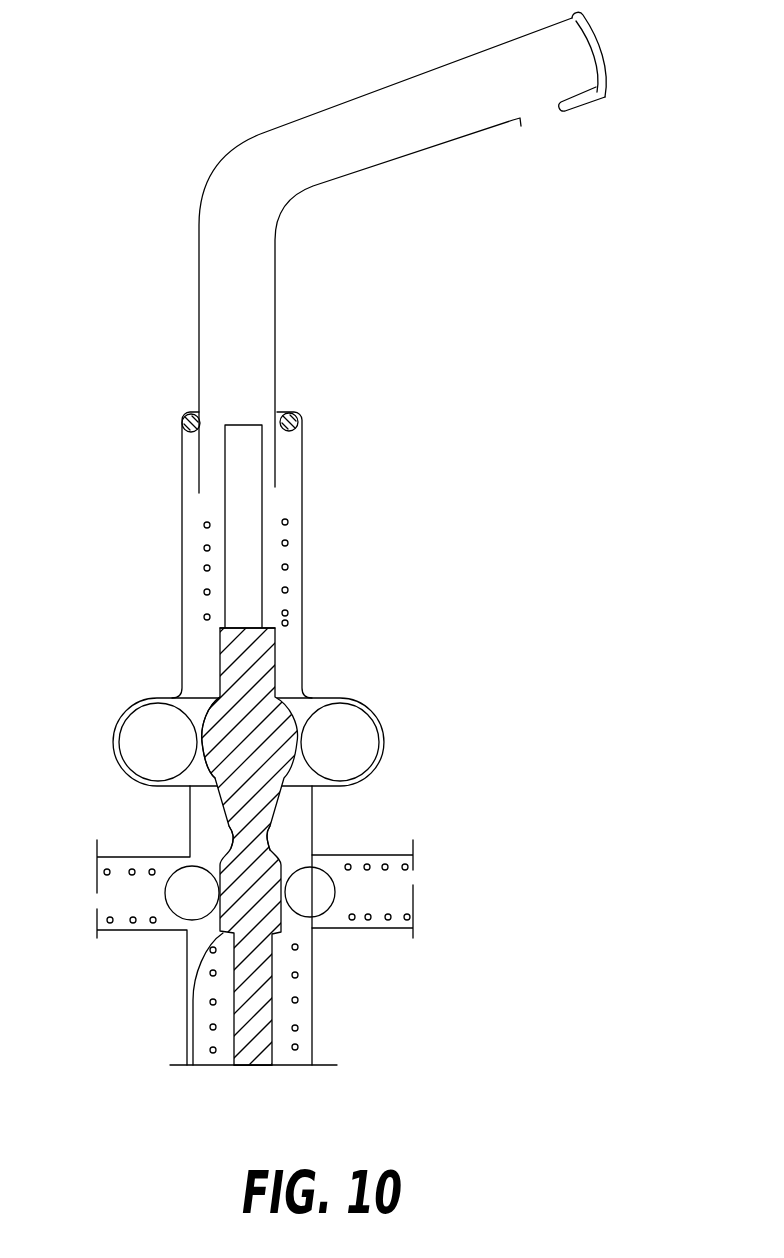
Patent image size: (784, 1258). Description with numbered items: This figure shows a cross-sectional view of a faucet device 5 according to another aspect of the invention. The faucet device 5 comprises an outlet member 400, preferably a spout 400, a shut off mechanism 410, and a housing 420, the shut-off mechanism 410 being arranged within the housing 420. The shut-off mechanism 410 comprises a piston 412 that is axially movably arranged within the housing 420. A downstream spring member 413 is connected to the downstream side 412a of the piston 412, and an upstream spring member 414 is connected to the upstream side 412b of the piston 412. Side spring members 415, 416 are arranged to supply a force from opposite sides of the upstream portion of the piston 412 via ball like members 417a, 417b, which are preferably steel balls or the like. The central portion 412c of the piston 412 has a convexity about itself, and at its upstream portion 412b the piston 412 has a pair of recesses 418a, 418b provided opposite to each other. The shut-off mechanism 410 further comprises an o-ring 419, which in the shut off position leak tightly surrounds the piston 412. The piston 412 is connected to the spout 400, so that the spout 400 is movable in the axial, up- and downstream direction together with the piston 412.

The outlet member 400 is at (412, 160).
The housing 420 is at (168, 525).
The downstream spring member 413 is at (287, 566).
The piston 412 is at (283, 661).
The downstream side of the piston 412a is at (215, 636).
The upstream side of the piston 412b is at (192, 993).
The central portion of the piston 412c is at (230, 733).
The o-ring 419 is at (348, 737).
The recess 418a is at (227, 840).
The recess 418b is at (267, 840).
The side spring member 415 is at (106, 873).
The side spring member 416 is at (389, 914).
The ball like member 417a is at (178, 905).
The ball like member 417b is at (317, 900).
The shut off mechanism 410 is at (293, 919).
The upstream spring member 414 is at (298, 1047).
The faucet device 5 is at (164, 1041).